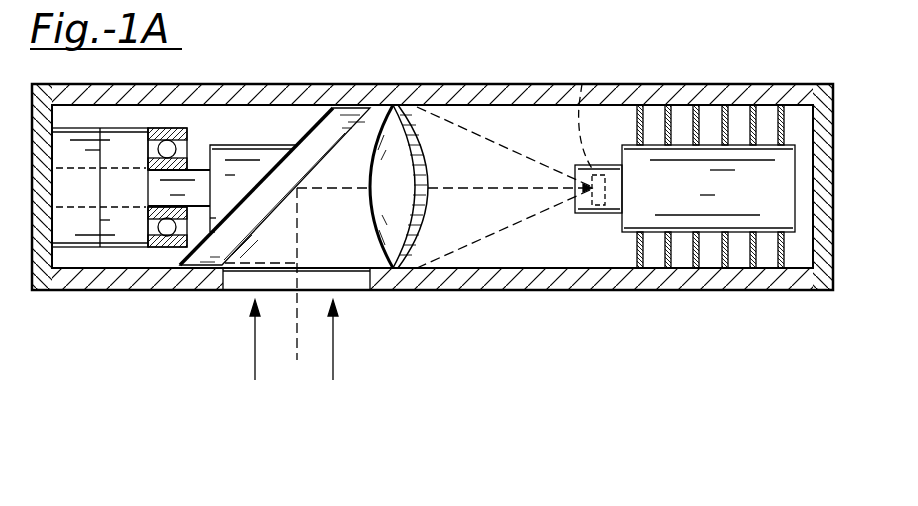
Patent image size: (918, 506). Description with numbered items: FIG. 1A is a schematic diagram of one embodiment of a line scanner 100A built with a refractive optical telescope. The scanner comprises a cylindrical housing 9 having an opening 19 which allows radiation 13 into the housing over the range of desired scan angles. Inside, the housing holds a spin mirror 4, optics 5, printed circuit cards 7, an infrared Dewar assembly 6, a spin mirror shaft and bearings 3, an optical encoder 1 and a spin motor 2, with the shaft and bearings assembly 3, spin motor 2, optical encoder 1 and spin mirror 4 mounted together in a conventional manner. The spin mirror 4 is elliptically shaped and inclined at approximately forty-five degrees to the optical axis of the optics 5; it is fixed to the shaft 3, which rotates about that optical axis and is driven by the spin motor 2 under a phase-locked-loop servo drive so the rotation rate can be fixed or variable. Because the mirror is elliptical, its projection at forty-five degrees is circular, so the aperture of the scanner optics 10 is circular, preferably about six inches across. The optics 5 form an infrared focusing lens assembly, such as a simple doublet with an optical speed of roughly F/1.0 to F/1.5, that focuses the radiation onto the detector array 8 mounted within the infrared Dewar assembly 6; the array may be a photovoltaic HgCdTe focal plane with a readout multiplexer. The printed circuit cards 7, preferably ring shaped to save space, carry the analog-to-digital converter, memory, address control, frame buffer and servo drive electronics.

The optical encoder 1 is at (70, 248).
The spin motor 2 is at (120, 248).
The spin mirror shaft and bearings 3 is at (199, 160).
The spin mirror 4 is at (313, 128).
The optics 5 is at (425, 233).
The infrared Dewar assembly 6 is at (622, 233).
The printed circuit cards 7 is at (752, 250).
The detector array 8 is at (585, 84).
The cylindrical housing 9 is at (438, 84).
The aperture of the scanner optics 10 is at (483, 153).
The radiation 13 is at (253, 347).
The opening 19 is at (222, 271).
The scanner assembly 100A is at (528, 305).